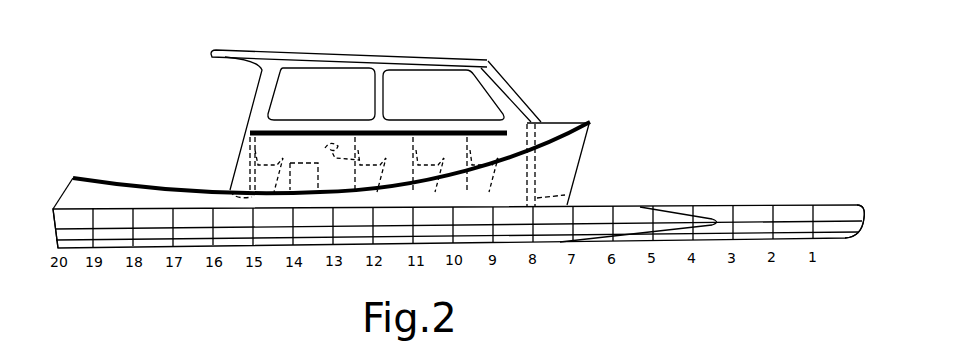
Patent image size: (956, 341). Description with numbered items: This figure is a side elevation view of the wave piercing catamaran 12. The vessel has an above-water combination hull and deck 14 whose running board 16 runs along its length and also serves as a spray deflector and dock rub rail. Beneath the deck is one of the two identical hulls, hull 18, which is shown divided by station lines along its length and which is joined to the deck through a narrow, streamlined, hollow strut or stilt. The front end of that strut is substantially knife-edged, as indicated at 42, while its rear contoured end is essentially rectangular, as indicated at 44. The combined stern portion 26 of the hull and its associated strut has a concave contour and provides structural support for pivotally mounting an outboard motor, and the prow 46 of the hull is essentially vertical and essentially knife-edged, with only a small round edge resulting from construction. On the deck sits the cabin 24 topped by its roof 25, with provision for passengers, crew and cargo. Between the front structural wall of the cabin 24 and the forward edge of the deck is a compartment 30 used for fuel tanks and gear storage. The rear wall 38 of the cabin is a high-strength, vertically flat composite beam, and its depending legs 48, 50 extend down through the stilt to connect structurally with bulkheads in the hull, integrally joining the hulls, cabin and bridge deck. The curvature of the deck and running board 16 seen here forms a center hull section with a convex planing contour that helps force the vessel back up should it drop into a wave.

The wave piercing catamaran 12 is at (230, 102).
The combination hull and deck 14 is at (560, 165).
The running board 16 is at (140, 185).
The hull 18 is at (707, 208).
The cabin 24 is at (447, 88).
The roof 25 is at (293, 52).
The combined stern portion 26 is at (53, 209).
The compartment 30 is at (567, 122).
The rear wall 38 is at (248, 162).
The knife-edged front end 42 is at (578, 160).
The rectangular rear end 44 is at (76, 194).
The prow 46 is at (864, 203).
The depending leg 48 is at (229, 190).
The depending leg 50 is at (567, 191).